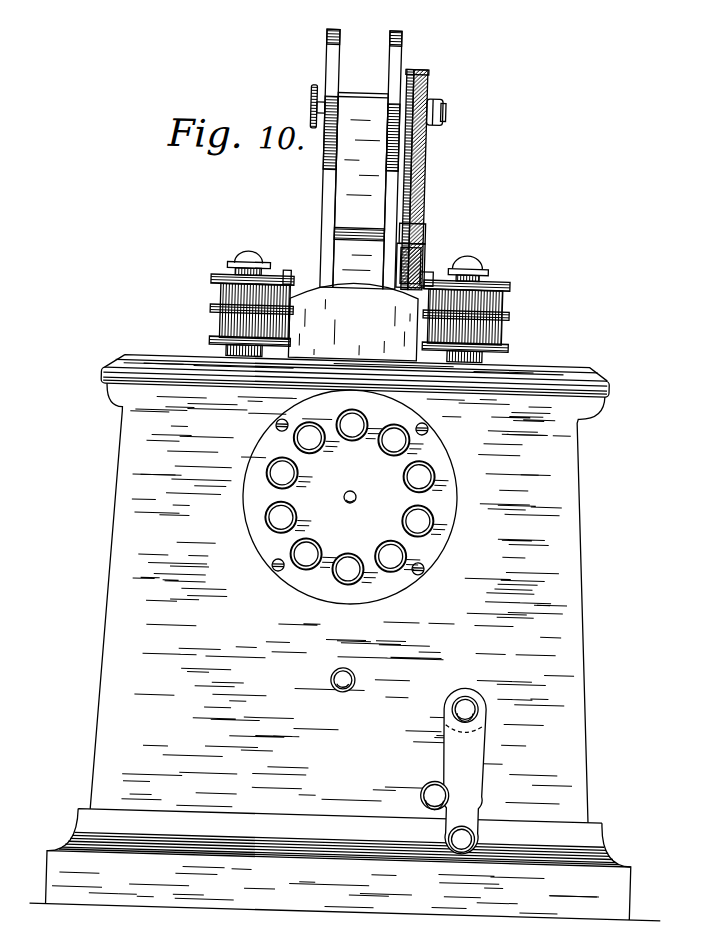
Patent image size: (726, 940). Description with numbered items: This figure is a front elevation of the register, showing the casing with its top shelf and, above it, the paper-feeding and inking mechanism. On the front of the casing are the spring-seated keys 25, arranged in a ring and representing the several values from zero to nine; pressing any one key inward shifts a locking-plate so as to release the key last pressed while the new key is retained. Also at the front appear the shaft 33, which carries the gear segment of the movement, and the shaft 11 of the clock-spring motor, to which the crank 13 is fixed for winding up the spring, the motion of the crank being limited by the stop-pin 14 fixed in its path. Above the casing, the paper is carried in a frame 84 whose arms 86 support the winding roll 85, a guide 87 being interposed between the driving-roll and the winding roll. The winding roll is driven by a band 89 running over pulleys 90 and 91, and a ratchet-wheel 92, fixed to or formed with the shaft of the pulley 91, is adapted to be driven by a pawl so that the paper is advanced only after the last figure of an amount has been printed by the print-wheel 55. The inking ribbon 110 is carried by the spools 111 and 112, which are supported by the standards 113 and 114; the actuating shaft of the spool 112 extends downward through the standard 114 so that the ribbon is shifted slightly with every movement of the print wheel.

The shaft 11 is at (474, 697).
The crank 13 is at (463, 771).
The stop-pin 14 is at (429, 790).
The spring-seated keys 25 is at (339, 418).
The shaft 33 is at (336, 679).
The print-wheel 55 is at (369, 321).
The frame 84 is at (316, 184).
The winding roll 85 is at (301, 108).
The arms 86 is at (314, 46).
The guide 87 is at (338, 230).
The band 89 is at (409, 161).
The pulley 90 is at (414, 78).
The pulley 91 is at (411, 251).
The ratchet-wheel 92 is at (406, 228).
The inking ribbon 110 is at (294, 284).
The spool 111 is at (209, 279).
The spool 112 is at (491, 279).
The standard 113 is at (223, 350).
The standard 114 is at (479, 353).